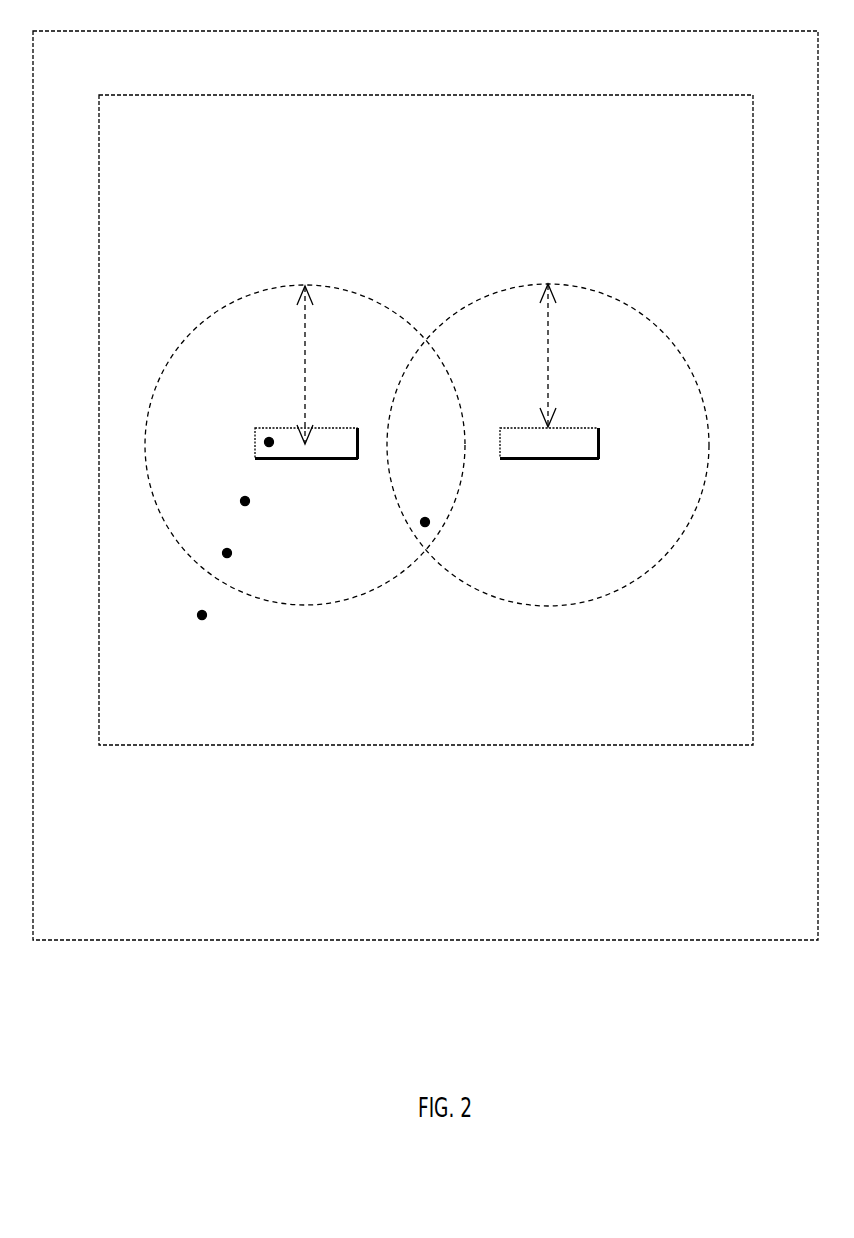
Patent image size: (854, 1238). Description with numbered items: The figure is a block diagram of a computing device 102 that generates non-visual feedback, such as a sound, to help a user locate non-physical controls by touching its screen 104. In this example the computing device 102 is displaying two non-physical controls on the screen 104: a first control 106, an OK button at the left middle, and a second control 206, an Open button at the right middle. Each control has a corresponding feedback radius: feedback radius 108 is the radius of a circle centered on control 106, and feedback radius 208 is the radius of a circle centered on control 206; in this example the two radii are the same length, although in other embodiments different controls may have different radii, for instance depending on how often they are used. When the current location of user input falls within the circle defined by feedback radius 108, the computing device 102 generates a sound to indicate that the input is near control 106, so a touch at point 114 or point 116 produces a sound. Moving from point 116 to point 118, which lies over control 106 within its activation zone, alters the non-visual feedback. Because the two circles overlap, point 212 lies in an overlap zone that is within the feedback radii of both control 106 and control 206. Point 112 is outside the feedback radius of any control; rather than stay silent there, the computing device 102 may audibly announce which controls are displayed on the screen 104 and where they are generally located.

The computing device 102 is at (425, 485).
The screen 104 is at (426, 420).
The control 106 is at (303, 460).
The feedback radius 108 is at (302, 398).
The point 112 is at (200, 617).
The point 114 is at (225, 555).
The point 116 is at (243, 503).
The point 118 is at (266, 445).
The control 206 is at (543, 460).
The feedback radius 208 is at (545, 398).
The point 212 is at (423, 524).